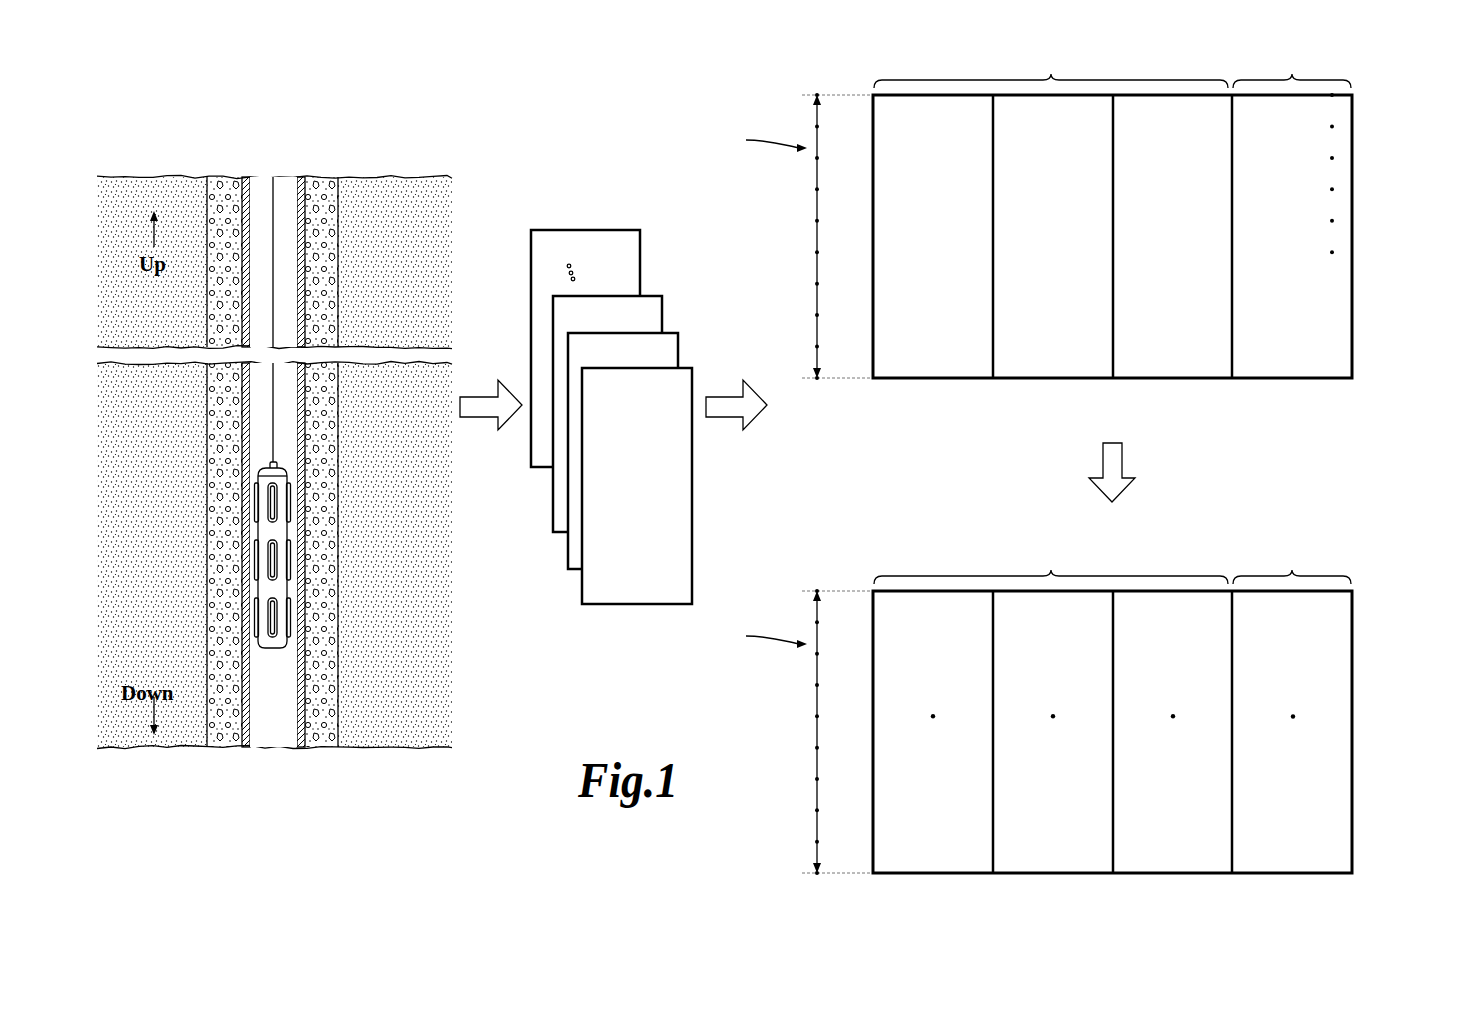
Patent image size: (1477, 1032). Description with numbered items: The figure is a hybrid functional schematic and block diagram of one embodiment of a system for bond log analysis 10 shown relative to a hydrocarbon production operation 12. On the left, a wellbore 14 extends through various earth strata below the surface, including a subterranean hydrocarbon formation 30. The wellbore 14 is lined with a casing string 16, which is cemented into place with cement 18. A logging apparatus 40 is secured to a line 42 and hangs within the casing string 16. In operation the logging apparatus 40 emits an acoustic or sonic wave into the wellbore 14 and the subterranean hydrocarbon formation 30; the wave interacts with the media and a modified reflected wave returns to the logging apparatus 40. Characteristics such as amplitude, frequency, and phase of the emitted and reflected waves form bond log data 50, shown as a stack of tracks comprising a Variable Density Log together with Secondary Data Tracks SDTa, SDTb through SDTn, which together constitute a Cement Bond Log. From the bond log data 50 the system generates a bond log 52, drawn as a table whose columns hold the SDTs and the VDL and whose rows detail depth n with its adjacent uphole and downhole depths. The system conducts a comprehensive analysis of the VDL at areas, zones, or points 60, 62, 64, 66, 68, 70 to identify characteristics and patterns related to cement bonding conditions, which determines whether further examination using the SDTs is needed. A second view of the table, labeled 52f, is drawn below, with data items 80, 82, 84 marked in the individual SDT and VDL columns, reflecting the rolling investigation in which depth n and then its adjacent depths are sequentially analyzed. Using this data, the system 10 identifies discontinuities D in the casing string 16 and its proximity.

The system for bond log analysis 10 is at (604, 329).
The hydrocarbon production operation 12 is at (141, 172).
The wellbore 14 is at (338, 218).
The casing string 16 is at (301, 178).
The cement 18 is at (326, 178).
The subterranean hydrocarbon formation 30 is at (166, 534).
The logging apparatus 40 is at (298, 561).
The line 42 is at (275, 443).
The bond log data 50 is at (603, 221).
The bond log 52 is at (1364, 100).
The filtered combined log display 52f is at (1364, 610).
The point 60 is at (1332, 221).
The point 62 is at (1332, 189).
The point 64 is at (1332, 252).
The point 66 is at (1332, 126).
The point 68 is at (1332, 95).
The point 70 is at (1332, 158).
The SDTa column data 80 is at (1173, 716).
The SDTb column data 82 is at (1053, 716).
The SDTc column data 84 is at (933, 716).
The discontinuity D is at (323, 667).